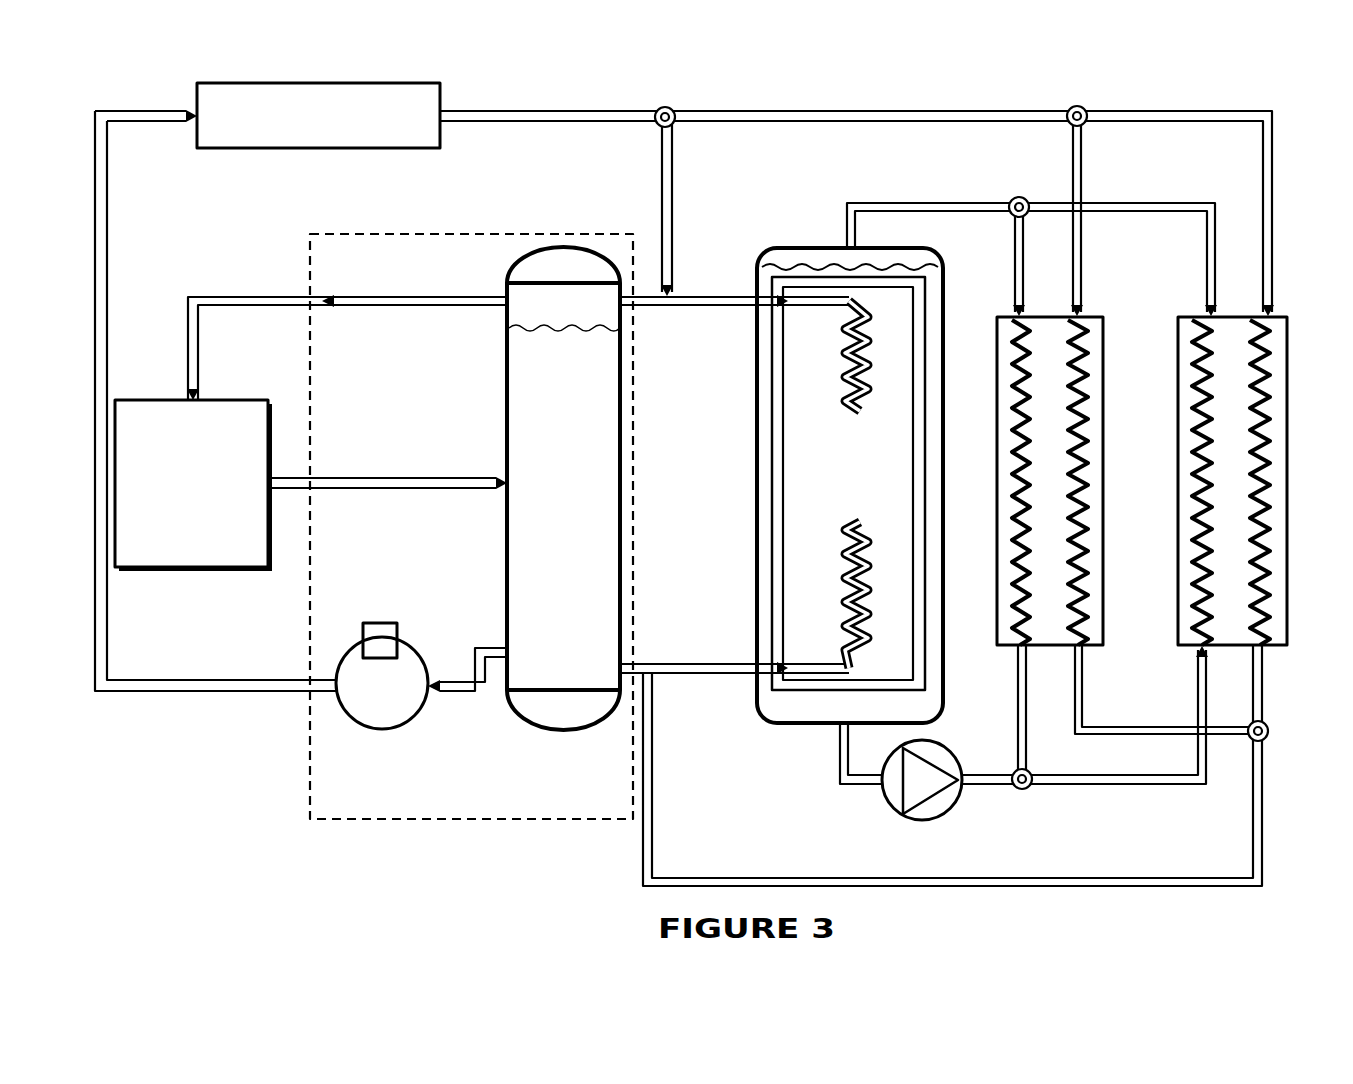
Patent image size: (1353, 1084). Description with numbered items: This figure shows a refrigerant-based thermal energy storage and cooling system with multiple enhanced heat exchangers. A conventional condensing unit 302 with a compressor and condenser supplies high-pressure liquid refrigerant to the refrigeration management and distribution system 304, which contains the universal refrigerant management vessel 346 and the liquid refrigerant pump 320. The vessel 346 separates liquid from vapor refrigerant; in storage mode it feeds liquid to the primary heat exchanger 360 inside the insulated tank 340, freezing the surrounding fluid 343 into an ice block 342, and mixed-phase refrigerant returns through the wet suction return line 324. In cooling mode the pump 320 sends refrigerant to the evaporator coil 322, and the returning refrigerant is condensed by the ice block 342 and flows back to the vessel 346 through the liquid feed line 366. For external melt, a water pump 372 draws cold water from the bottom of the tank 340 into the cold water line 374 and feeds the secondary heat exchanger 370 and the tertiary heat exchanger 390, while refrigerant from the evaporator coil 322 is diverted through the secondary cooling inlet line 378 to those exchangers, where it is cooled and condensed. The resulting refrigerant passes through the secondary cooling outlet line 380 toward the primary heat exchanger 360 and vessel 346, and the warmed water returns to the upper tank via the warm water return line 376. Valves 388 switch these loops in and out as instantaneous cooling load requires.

The condensing unit 302 is at (241, 575).
The refrigeration management and distribution system 304 is at (310, 718).
The liquid refrigerant pump 320 is at (410, 637).
The evaporator coil 322 is at (391, 83).
The wet suction return line 324 is at (700, 292).
The insulated tank 340 is at (759, 705).
The ice block 342 is at (800, 705).
The fluid 343 is at (944, 263).
The universal refrigerant management vessel 346 is at (543, 467).
The primary heat exchanger 360 is at (833, 525).
The liquid feed line 366 is at (711, 661).
The secondary heat exchanger unit 370 is at (1108, 326).
The water pump 372 is at (906, 818).
The cold water line 374 is at (990, 787).
The warm water return line 376 is at (1004, 200).
The secondary cooling inlet line 378 is at (687, 108).
The secondary cooling outlet line 380 is at (1312, 846).
The valves 388 is at (656, 124).
The tertiary heat exchanger unit 390 is at (1177, 326).